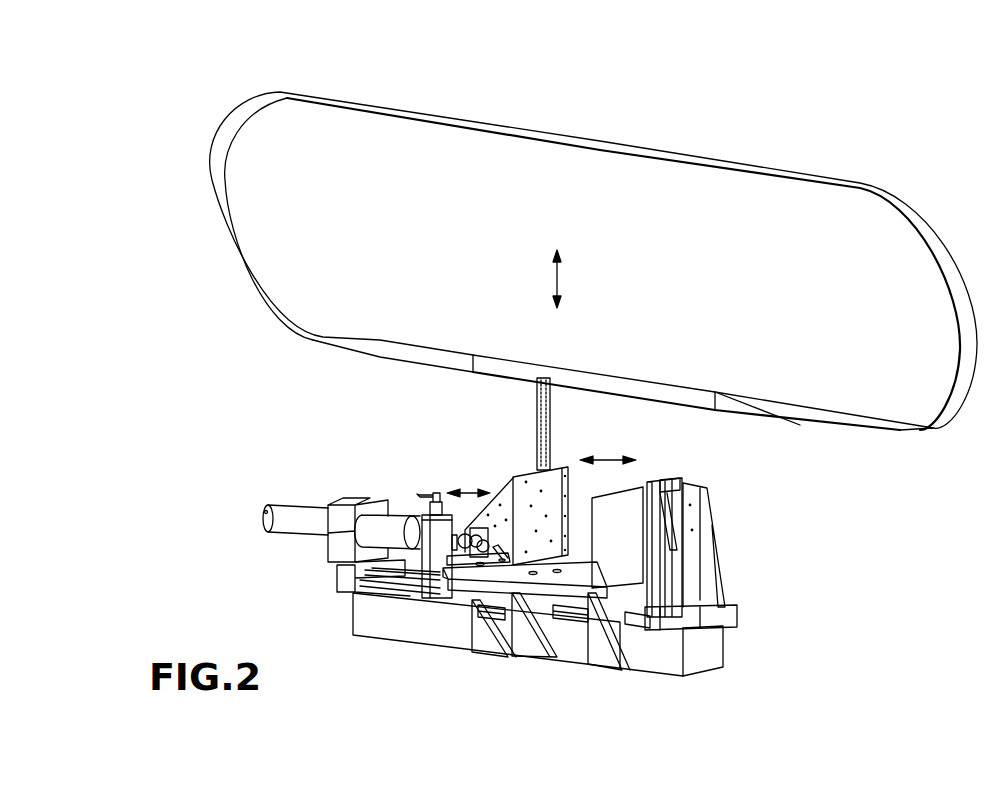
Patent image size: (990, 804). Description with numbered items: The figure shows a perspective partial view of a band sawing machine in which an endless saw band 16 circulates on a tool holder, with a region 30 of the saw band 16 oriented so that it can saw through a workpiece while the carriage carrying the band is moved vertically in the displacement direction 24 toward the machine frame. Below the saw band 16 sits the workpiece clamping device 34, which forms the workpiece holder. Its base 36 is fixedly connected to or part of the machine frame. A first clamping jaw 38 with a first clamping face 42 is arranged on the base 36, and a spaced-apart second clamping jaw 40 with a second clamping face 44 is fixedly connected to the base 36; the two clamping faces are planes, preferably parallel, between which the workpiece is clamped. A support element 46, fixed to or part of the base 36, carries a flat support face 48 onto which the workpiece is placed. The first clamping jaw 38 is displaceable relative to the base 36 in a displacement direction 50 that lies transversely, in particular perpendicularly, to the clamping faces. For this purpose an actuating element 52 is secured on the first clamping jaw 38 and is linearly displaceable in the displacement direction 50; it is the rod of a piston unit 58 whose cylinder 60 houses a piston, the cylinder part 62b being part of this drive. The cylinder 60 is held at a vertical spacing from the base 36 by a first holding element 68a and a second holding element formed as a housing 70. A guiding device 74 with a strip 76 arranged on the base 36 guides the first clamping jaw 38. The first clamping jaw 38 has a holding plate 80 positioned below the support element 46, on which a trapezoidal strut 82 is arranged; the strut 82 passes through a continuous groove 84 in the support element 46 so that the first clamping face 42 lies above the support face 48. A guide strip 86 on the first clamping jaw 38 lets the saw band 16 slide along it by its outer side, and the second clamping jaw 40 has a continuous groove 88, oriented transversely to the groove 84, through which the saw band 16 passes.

The saw band 16 is at (661, 154).
The displacement direction 24 is at (561, 273).
The region of the saw band 30 is at (620, 386).
The workpiece clamping device 34 is at (765, 550).
The base 36 is at (435, 620).
The first clamping jaw 38 is at (530, 477).
The second clamping jaw 40 is at (685, 505).
The first clamping face 42 is at (551, 500).
The second clamping face 44 is at (640, 509).
The support element 46 is at (568, 590).
The support face 48 is at (560, 590).
The displacement direction 50 is at (472, 488).
The actuating element 52 is at (452, 535).
The piston unit 58 is at (305, 510).
The cylinder 60 is at (292, 512).
The drive cylinder 62b is at (425, 530).
The first holding element 68a is at (332, 553).
The housing 70 is at (400, 590).
The guiding device 74 is at (510, 608).
The strip 76 is at (382, 590).
The holding plate 80 is at (462, 625).
The strut 82 is at (505, 503).
The groove 84 is at (592, 598).
The guide strip 86 is at (565, 470).
The groove 88 is at (688, 510).